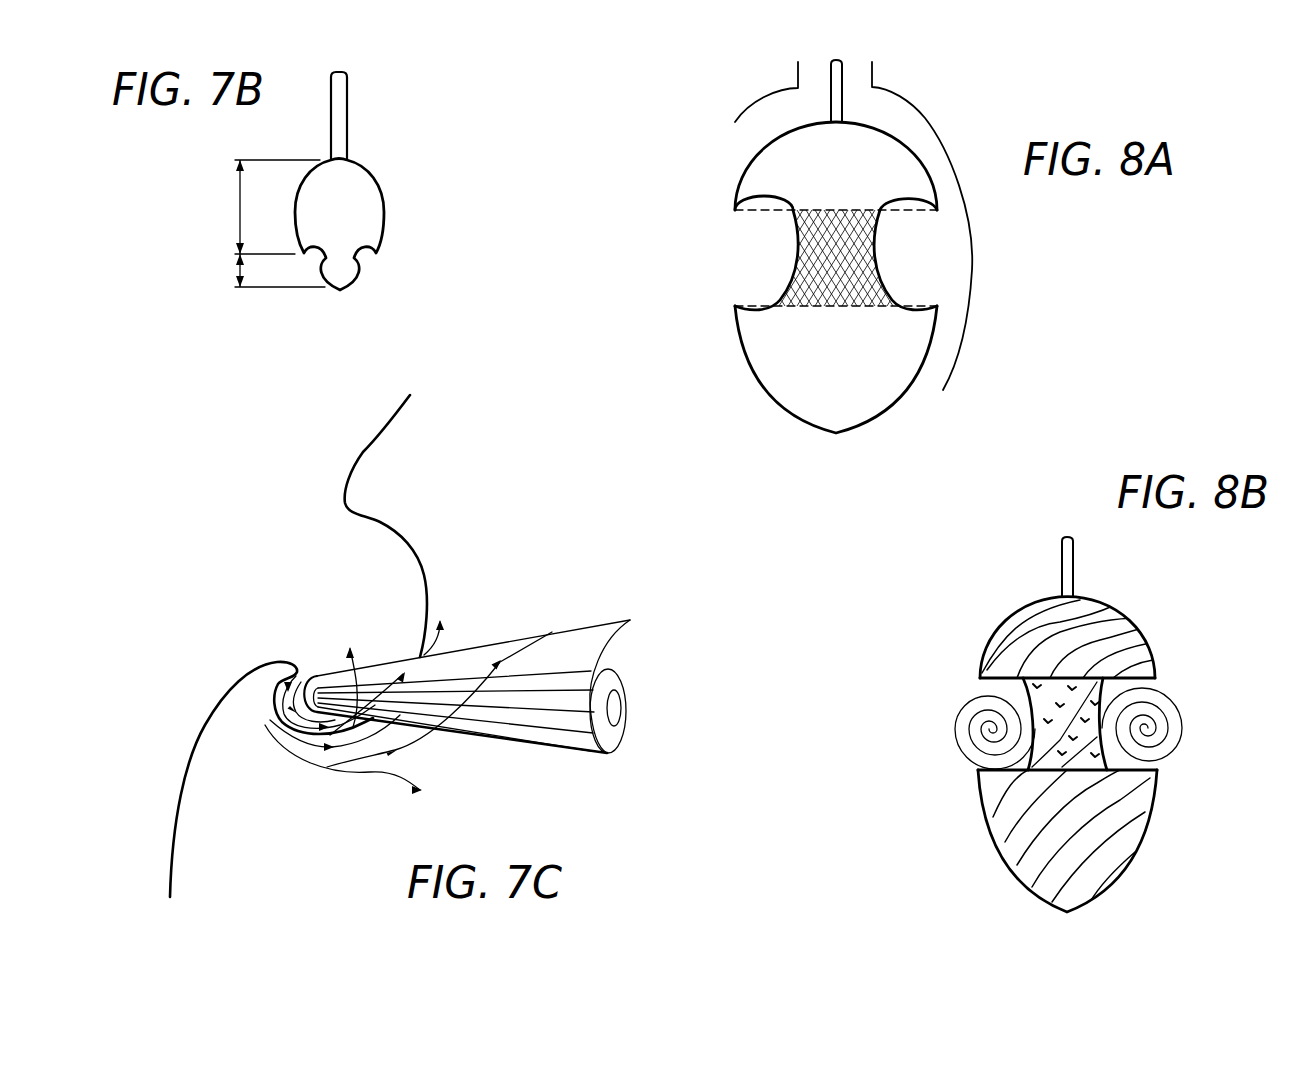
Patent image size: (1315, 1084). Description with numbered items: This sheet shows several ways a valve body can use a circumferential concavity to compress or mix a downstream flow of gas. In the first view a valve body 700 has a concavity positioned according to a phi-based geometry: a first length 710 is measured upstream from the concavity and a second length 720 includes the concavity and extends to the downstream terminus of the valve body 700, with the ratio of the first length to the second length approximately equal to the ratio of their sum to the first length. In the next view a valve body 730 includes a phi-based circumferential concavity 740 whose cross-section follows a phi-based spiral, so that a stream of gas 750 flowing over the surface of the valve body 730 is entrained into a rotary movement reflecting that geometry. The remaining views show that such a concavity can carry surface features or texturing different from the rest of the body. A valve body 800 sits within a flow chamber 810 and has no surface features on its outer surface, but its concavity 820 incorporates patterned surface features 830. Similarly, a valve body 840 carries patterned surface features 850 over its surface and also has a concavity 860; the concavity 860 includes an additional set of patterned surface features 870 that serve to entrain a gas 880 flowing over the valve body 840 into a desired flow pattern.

In FIG. 7B, the valve body 700 is at (353, 178).
In FIG. 7B, the first length 710 is at (240, 205).
In FIG. 7B, the second length 720 is at (229, 269).
In FIG. 7C, the valve body 730 is at (363, 452).
In FIG. 7C, the phi-based circumferential concavity 740 is at (376, 607).
In FIG. 7C, the stream of gas 750 is at (510, 640).
In FIG. 8A, the valve body 800 is at (839, 246).
In FIG. 8A, the flow chamber 810 is at (900, 120).
In FIG. 8A, the concavity 820 is at (903, 233).
In FIG. 8A, the patterned surface features 830 is at (818, 272).
In FIG. 8B, the valve body 840 is at (1076, 724).
In FIG. 8B, the patterned surface features 850 is at (1098, 630).
In FIG. 8B, the concavity 860 is at (1017, 682).
In FIG. 8B, the additional set of patterned surface features 870 is at (1053, 748).
In FIG. 8B, the gas 880 is at (1175, 703).